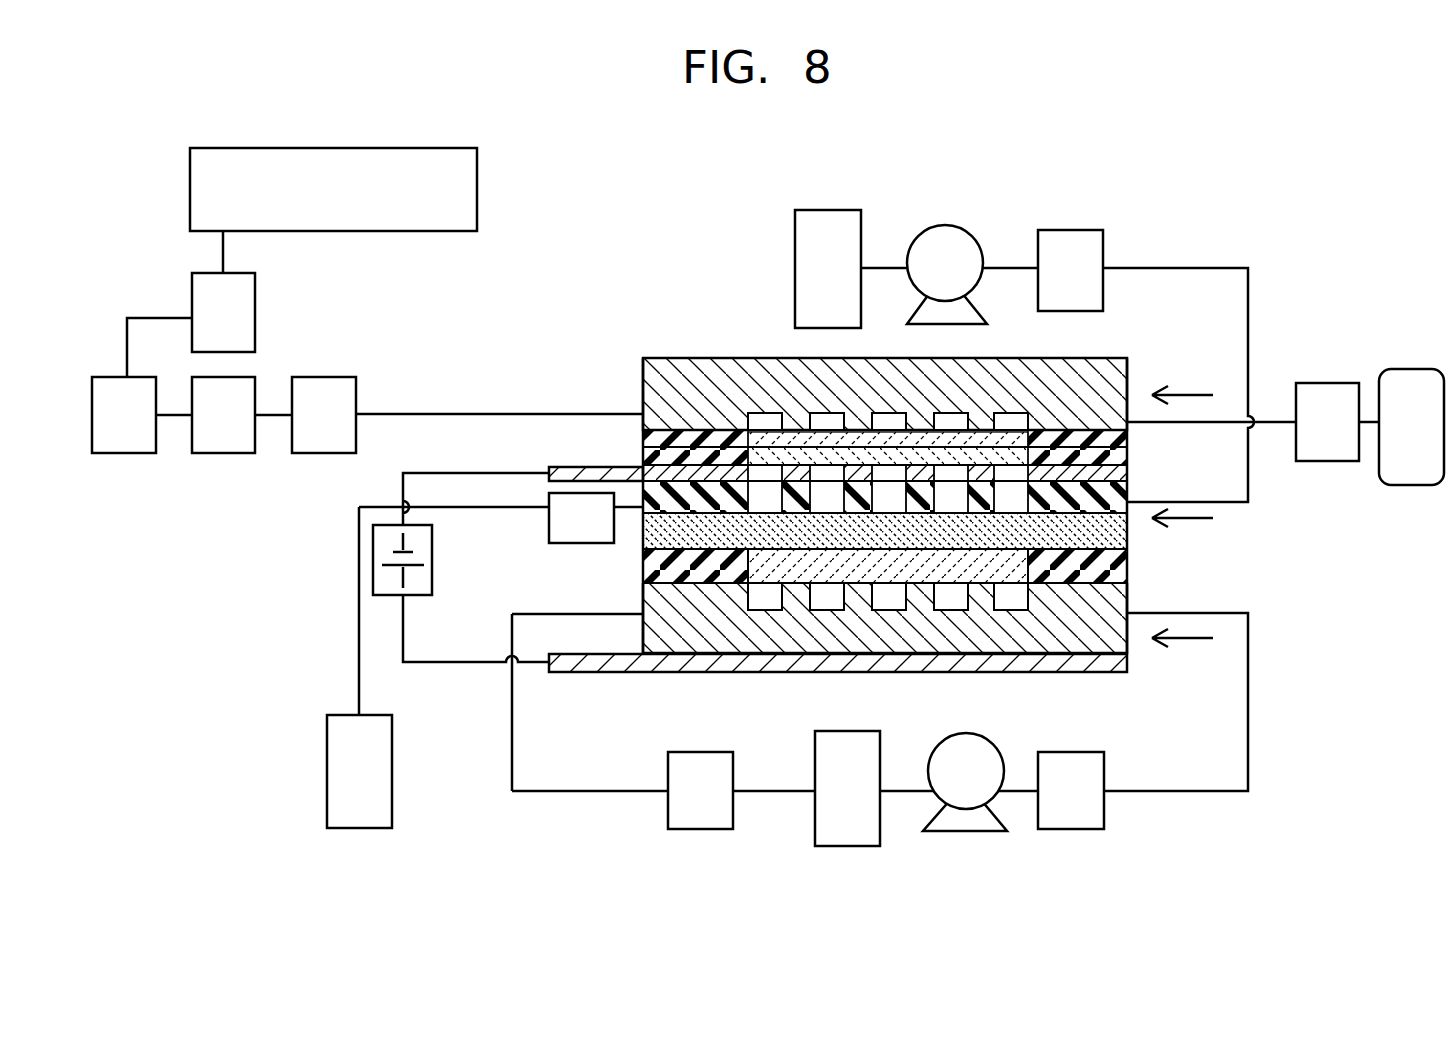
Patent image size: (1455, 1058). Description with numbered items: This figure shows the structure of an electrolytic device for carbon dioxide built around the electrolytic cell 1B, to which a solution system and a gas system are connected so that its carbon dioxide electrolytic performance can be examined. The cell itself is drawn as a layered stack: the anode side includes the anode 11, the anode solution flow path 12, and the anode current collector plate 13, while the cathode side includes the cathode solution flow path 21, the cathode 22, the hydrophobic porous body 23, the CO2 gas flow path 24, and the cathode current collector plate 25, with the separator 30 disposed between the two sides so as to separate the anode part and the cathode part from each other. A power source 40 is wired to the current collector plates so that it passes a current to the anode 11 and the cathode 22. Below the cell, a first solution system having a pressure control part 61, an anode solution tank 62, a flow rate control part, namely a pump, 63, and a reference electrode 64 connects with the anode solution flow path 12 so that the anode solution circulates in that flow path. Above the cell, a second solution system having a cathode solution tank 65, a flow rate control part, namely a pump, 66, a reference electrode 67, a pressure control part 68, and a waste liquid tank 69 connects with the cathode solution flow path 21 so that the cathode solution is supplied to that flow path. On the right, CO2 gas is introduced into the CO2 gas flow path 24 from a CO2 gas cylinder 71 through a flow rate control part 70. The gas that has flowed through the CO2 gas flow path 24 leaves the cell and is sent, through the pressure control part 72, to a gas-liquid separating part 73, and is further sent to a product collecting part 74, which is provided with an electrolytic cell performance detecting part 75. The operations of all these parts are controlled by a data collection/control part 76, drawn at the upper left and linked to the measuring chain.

The electrolytic cell for carbon dioxide 1B is at (1117, 339).
The anode 11 is at (771, 565).
The anode solution flow path 12 is at (748, 592).
The anode current collector plate 13 is at (594, 672).
The cathode solution flow path 21 is at (771, 498).
The cathode 22 is at (748, 457).
The hydrophobic porous body 23 is at (793, 440).
The CO2 gas flow path 24 is at (748, 417).
The cathode current collector plate 25 is at (569, 465).
The separator 30 is at (1110, 540).
The power source 40 is at (434, 559).
The pressure control part 61 is at (696, 752).
The anode solution tank 62 is at (847, 731).
The flow rate control part (pump) 63 is at (963, 733).
The reference electrode 64 is at (1069, 752).
The cathode solution tank 65 is at (827, 210).
The flow rate control part (pump) 66 is at (941, 225).
The reference electrode 67 is at (1068, 230).
The pressure control part 68 is at (586, 543).
The waste liquid tank 69 is at (326, 774).
The flow rate control part 70 is at (1325, 383).
The CO2 gas cylinder 71 is at (1409, 369).
The pressure control part 72 is at (318, 453).
The gas-liquid separating part 73 is at (218, 453).
The product collecting part 74 is at (117, 453).
The electrolytic cell performance detecting part 75 is at (256, 316).
The data collection/control part 76 is at (190, 185).